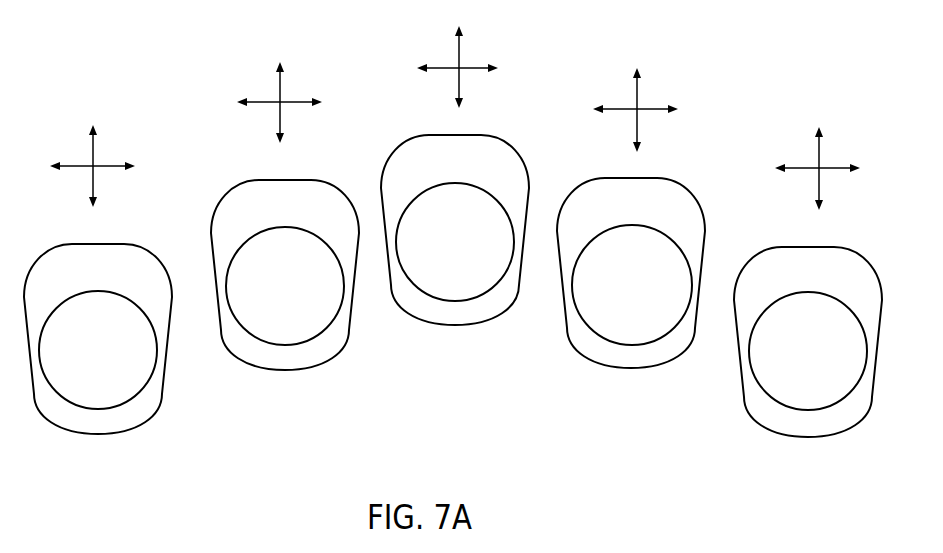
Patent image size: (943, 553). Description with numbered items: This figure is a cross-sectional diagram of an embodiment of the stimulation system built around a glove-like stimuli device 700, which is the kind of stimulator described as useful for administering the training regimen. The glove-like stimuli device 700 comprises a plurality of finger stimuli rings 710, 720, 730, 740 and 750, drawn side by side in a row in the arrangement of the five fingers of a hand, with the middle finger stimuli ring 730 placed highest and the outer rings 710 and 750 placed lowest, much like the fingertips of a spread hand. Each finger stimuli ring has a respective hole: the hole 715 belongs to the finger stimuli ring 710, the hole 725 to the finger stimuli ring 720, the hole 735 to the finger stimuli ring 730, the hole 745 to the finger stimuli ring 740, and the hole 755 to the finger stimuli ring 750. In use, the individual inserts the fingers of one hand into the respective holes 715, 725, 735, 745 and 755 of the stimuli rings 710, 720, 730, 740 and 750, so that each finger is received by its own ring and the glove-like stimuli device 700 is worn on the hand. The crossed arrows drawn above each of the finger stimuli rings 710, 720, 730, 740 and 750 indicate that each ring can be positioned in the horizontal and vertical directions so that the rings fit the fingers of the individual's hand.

The glove-like stimuli device 700 is at (182, 88).
The finger stimuli ring 710 is at (148, 415).
The hole 715 is at (63, 377).
The finger stimuli ring 720 is at (333, 355).
The hole 725 is at (258, 327).
The finger stimuli ring 730 is at (482, 323).
The hole 735 is at (428, 275).
The finger stimuli ring 740 is at (653, 368).
The hole 745 is at (605, 317).
The finger stimuli ring 750 is at (830, 435).
The hole 755 is at (773, 380).